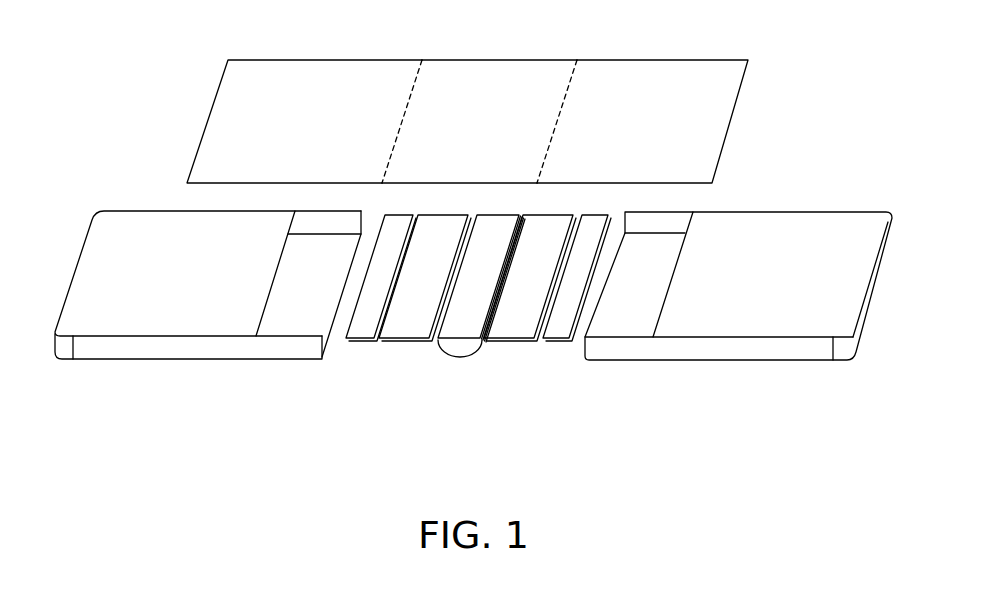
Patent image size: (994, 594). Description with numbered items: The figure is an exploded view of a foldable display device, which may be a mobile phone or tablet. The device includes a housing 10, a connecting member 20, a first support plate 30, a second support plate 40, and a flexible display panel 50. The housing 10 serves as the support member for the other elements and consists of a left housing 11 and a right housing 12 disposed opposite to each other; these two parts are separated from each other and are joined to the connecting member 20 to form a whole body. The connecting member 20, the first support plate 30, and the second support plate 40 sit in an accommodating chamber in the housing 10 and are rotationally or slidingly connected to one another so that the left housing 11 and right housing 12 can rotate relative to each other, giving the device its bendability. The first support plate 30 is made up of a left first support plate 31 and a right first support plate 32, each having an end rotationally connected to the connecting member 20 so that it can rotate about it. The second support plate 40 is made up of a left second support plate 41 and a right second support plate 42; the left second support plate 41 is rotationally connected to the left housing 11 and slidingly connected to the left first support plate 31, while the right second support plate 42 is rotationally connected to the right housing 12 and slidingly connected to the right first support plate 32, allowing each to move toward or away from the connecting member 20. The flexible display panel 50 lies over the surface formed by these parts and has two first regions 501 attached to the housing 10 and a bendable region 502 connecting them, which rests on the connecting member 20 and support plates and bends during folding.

The housing 10 is at (250, 414).
The left housing 11 is at (190, 353).
The right housing 12 is at (700, 353).
The connecting member 20 is at (453, 347).
The first support plate 30 is at (350, 414).
The left first support plate 31 is at (412, 333).
The right first support plate 32 is at (515, 333).
The second support plate 40 is at (457, 416).
The left second support plate 41 is at (363, 333).
The right second support plate 42 is at (556, 333).
The flexible display panel 50 is at (733, 90).
The first region 501 is at (327, 65).
The bendable region 502 is at (493, 63).